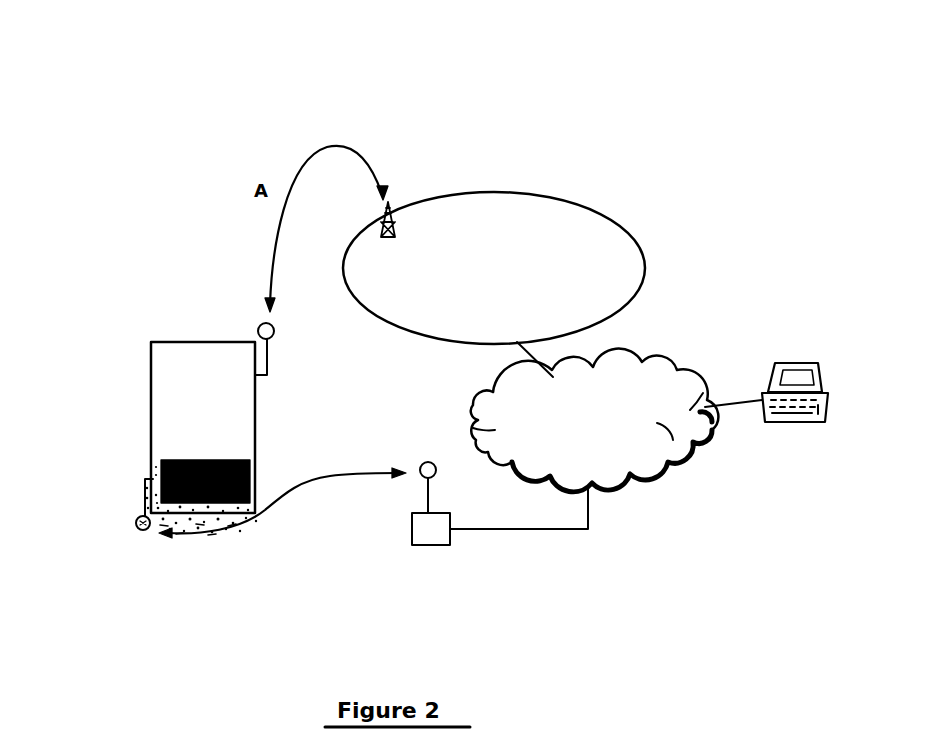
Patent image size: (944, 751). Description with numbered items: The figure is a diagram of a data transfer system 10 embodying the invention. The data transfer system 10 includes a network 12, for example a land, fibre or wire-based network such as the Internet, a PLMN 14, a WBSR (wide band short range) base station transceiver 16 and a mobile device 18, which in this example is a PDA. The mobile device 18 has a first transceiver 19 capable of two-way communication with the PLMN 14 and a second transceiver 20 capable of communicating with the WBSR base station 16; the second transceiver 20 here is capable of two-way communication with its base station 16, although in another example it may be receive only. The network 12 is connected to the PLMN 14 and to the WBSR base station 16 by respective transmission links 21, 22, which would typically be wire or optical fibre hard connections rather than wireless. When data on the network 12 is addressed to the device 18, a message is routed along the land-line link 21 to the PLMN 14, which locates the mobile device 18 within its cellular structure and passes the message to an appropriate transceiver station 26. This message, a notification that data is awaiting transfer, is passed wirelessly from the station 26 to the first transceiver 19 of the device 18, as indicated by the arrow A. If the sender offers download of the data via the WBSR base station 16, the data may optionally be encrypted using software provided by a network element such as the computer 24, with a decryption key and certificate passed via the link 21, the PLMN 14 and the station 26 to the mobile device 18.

The data transfer system 10 is at (150, 287).
The network 12 is at (643, 372).
The PLMN 14 is at (490, 217).
The WBSR base station transceiver 16 is at (432, 533).
The mobile device 18 is at (172, 429).
The first transceiver 19 is at (258, 330).
The second transceiver 20 is at (150, 478).
The transmission link 21 is at (546, 360).
The transmission link 22 is at (513, 530).
The computer 24 is at (808, 421).
The transceiver station 26 is at (397, 213).